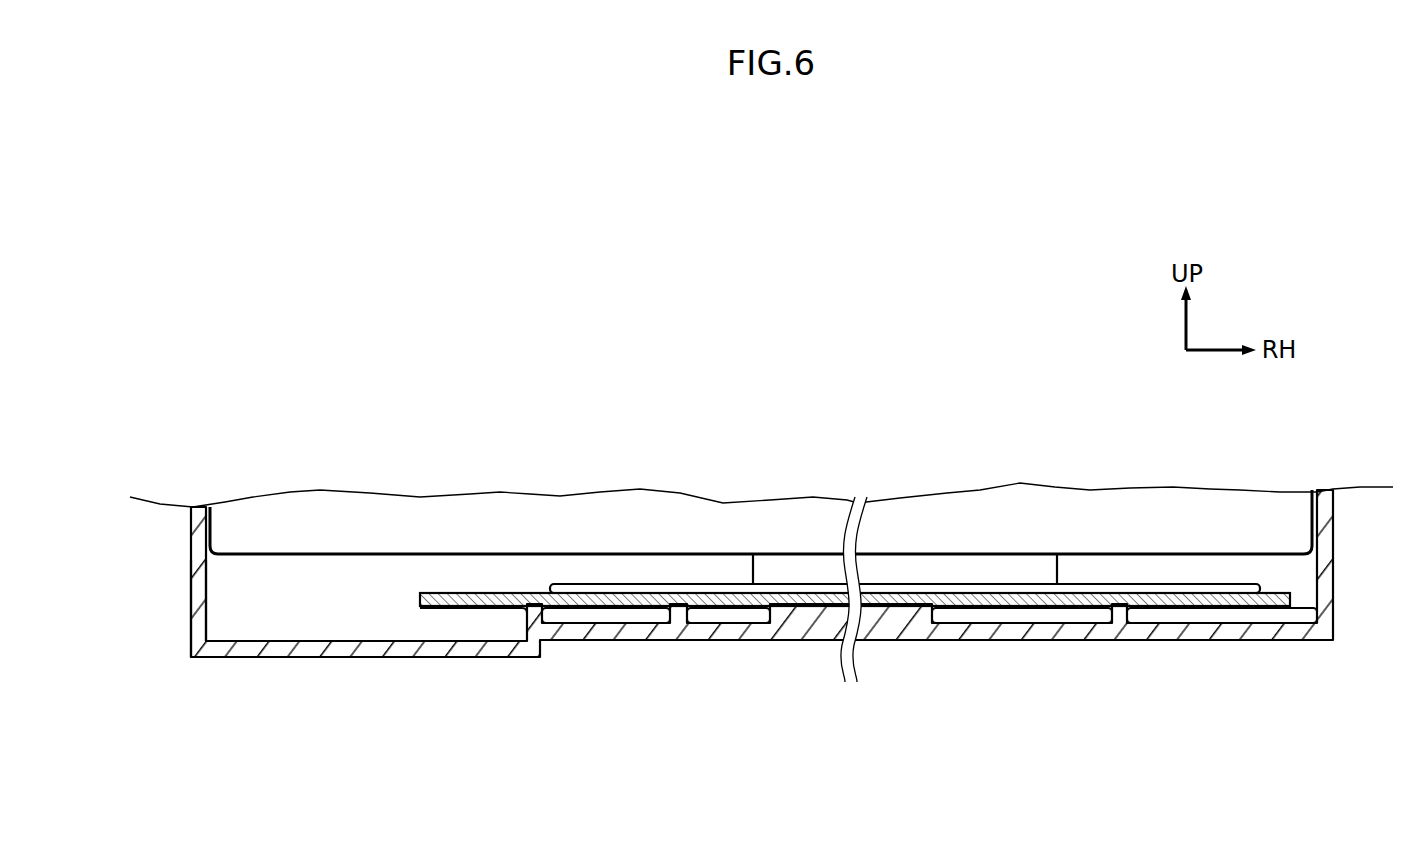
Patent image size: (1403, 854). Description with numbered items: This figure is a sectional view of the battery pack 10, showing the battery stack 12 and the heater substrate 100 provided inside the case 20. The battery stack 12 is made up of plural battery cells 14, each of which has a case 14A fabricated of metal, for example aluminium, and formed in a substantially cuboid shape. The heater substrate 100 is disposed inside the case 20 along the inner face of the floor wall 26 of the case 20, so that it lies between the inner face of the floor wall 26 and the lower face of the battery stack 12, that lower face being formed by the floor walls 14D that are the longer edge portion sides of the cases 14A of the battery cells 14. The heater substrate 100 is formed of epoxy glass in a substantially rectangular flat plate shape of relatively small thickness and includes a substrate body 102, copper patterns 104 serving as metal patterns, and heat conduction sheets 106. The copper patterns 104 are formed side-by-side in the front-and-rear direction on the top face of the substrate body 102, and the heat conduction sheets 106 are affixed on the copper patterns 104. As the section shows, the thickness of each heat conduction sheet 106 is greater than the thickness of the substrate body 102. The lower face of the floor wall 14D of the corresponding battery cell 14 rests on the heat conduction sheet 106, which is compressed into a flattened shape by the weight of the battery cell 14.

The battery pack 10 is at (954, 412).
The battery stack 12 is at (1213, 503).
The battery cell 14 is at (261, 563).
The case 14A is at (225, 535).
The floor wall 14D is at (314, 557).
The case 20 is at (188, 664).
The floor wall 26 is at (605, 641).
The heater substrate 100 is at (408, 592).
The substrate body 102 is at (458, 592).
The copper pattern 104 is at (606, 584).
The heat conduction sheet 106 is at (776, 565).